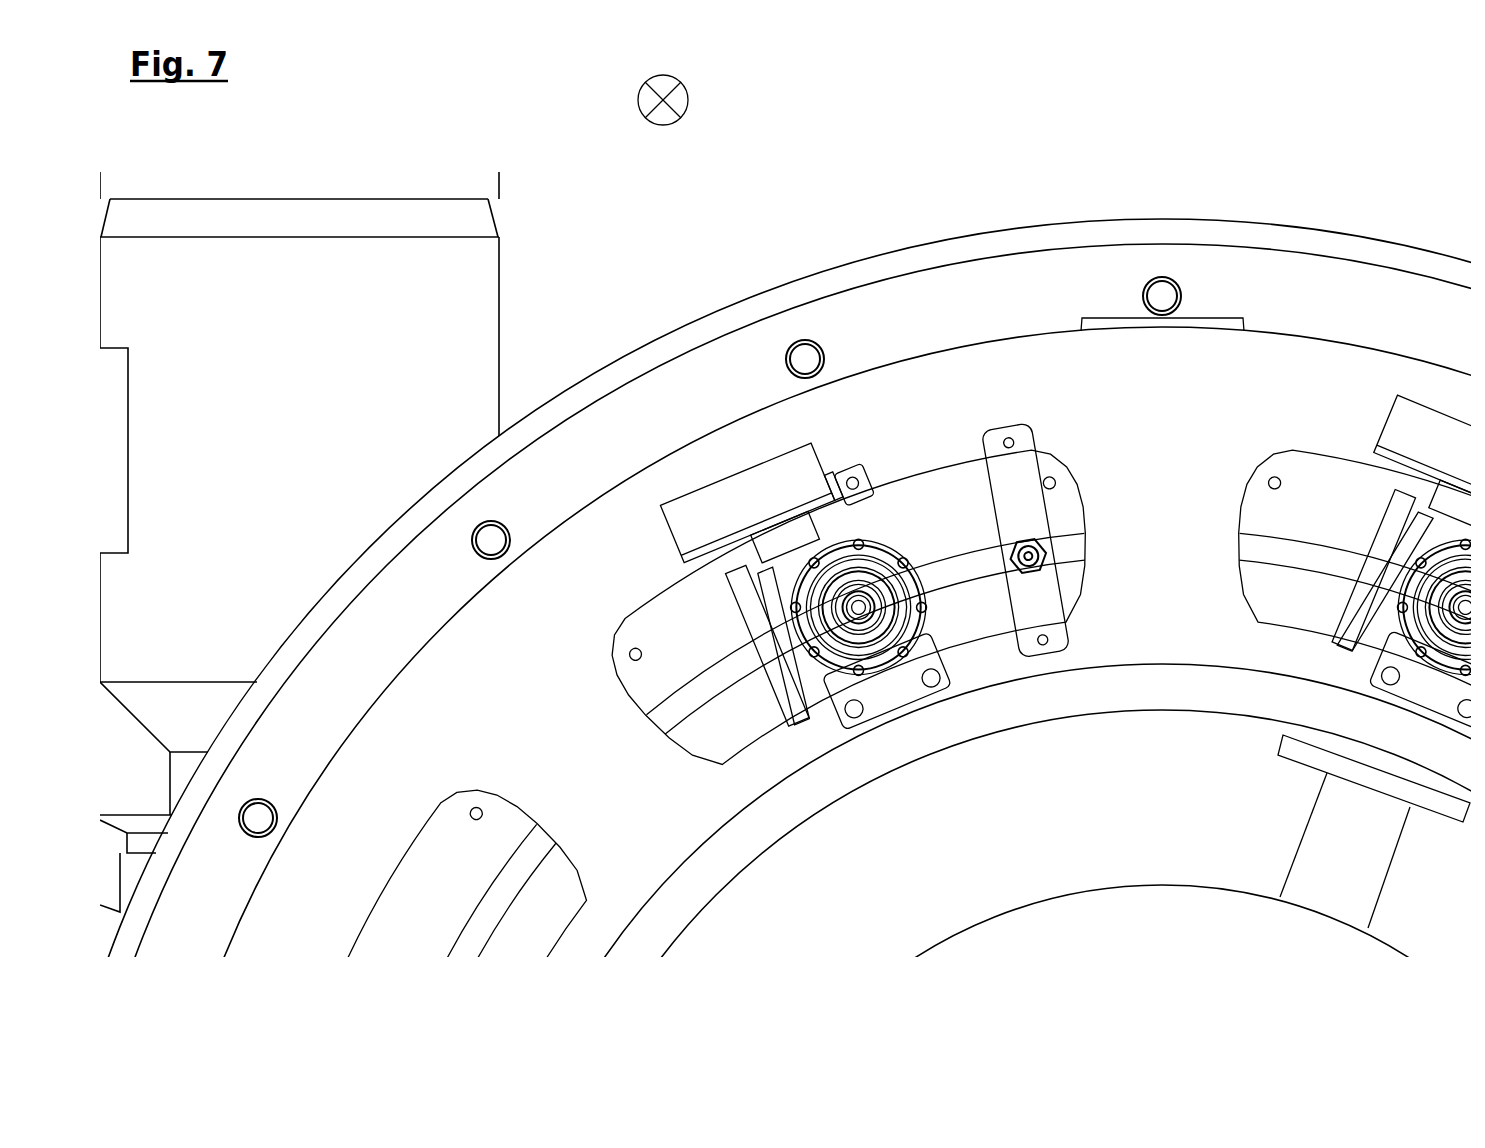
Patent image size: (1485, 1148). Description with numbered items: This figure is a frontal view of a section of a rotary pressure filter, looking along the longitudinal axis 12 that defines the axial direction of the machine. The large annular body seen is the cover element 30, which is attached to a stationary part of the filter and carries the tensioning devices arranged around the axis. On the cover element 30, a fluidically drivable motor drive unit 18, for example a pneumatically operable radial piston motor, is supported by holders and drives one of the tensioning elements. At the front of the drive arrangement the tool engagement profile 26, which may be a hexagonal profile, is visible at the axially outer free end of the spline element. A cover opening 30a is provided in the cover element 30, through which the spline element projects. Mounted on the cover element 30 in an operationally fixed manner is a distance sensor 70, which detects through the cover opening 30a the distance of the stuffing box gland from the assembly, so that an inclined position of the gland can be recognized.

The longitudinal axis 12 is at (663, 133).
The motor drive unit 18 is at (745, 504).
The tool engagement profile 26 is at (862, 612).
The cover element 30 is at (494, 677).
The cover opening 30a is at (917, 519).
The distance sensor 70 is at (1031, 551).